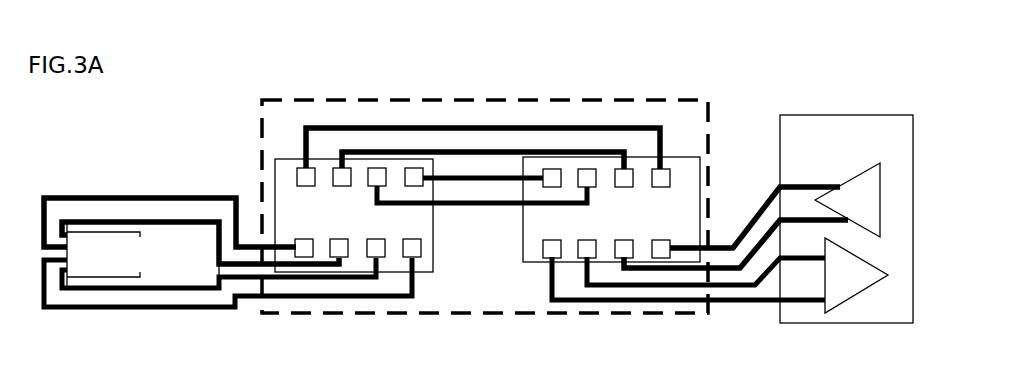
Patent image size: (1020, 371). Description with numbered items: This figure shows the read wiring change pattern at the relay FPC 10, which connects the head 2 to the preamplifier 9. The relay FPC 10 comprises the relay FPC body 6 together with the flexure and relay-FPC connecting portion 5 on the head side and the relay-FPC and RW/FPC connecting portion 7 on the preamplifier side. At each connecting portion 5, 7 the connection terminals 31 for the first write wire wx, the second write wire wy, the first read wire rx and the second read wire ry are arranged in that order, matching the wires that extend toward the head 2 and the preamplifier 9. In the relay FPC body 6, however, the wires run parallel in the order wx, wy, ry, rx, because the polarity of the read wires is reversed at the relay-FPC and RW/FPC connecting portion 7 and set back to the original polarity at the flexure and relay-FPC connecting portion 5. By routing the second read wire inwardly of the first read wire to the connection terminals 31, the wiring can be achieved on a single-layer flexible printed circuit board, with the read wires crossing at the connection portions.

The head 2 is at (138, 258).
The flexure and relay-FPC connecting portion 5 is at (432, 262).
The relay FPC body 6 is at (665, 112).
The relay-FPC and RW/FPC connecting portion 7 is at (698, 157).
The preamplifier 9 is at (830, 115).
The relay FPC 10 is at (563, 97).
The connection terminal 31 is at (415, 237).